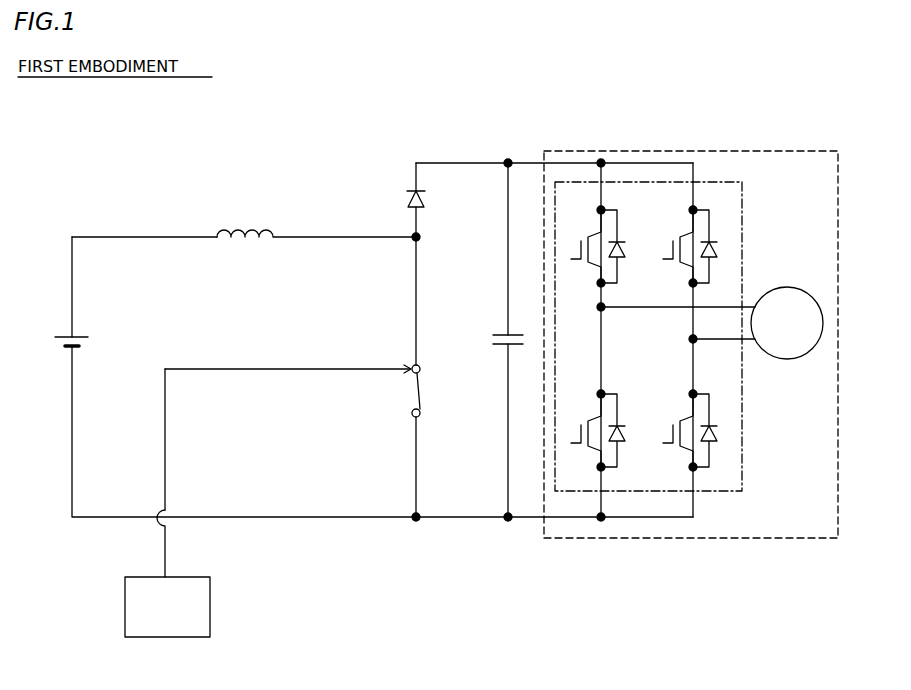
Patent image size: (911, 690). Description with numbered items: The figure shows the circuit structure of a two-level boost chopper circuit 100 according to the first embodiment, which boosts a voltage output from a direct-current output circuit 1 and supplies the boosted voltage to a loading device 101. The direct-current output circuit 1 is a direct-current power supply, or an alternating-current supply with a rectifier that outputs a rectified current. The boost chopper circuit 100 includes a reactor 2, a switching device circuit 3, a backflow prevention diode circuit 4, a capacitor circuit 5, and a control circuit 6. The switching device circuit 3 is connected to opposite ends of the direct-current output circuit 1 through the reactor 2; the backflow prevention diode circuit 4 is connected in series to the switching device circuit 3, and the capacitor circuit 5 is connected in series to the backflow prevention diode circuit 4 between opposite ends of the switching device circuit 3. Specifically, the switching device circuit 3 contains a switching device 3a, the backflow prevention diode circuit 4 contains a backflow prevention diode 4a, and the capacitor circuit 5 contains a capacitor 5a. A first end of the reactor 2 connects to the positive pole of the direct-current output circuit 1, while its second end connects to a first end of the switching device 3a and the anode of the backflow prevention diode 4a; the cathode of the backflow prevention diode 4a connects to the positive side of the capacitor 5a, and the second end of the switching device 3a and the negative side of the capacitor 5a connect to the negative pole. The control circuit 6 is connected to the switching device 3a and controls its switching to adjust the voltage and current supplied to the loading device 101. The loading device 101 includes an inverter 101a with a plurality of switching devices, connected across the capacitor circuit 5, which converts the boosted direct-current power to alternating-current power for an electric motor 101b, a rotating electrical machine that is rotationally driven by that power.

The boost chopper circuit 100 is at (66, 168).
The direct-current output circuit 1 is at (62, 336).
The reactor 2 is at (222, 232).
The switching device circuit 3 is at (380, 391).
The switching device 3a is at (416, 385).
The backflow prevention diode circuit 4 is at (373, 185).
The backflow prevention diode 4a is at (406, 196).
The capacitor circuit 5 is at (487, 313).
The capacitor 5a is at (498, 334).
The control circuit 6 is at (125, 606).
The loading device 101 is at (707, 148).
The inverter 101a is at (744, 237).
The electric motor 101b is at (794, 281).